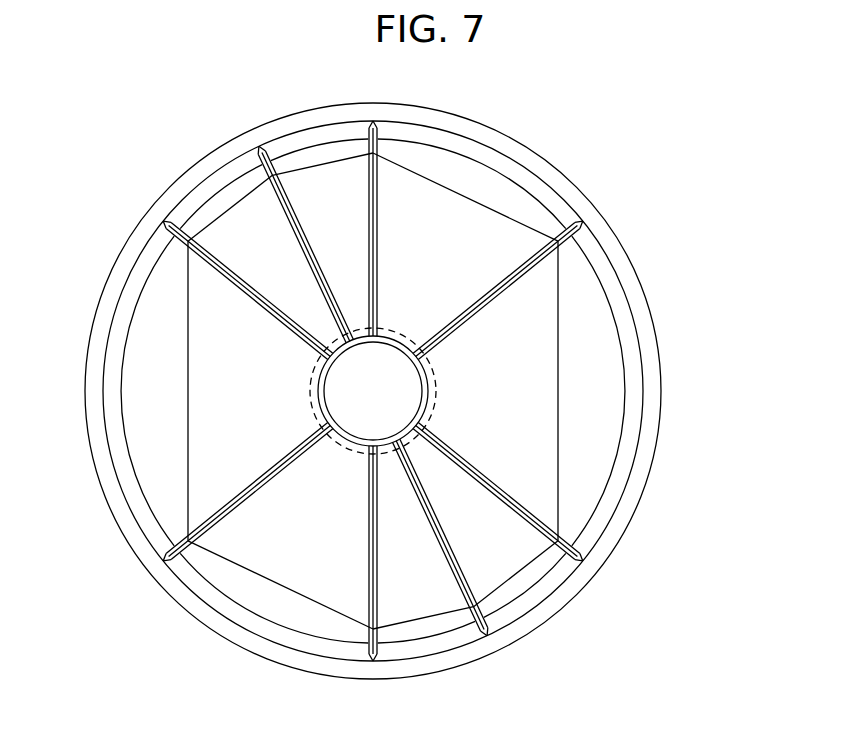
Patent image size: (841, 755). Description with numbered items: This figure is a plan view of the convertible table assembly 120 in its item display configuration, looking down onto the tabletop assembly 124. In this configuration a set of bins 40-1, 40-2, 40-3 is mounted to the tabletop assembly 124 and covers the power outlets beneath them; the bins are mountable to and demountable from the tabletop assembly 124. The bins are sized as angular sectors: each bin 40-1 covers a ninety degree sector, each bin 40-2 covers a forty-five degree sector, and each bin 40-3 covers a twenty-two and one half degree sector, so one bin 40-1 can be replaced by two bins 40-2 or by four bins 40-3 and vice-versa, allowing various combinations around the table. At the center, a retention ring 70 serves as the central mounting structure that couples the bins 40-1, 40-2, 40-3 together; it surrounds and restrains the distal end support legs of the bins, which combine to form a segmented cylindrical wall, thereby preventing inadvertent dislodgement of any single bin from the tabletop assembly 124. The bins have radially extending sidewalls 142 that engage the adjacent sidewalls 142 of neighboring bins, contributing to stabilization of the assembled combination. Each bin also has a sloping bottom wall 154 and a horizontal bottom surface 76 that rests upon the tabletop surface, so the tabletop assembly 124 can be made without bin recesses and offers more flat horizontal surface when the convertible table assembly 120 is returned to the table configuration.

The convertible table assembly 120 is at (540, 80).
The tabletop assembly 124 is at (644, 292).
The bin 40-1 is at (101, 292).
The bin 40-2 is at (532, 170).
The bin 40-3 is at (302, 112).
The radially extending sidewalls 142 is at (490, 291).
The retention ring 70 is at (437, 399).
The horizontal bottom surface 76 is at (163, 397).
The sloping bottom wall 154 is at (281, 397).